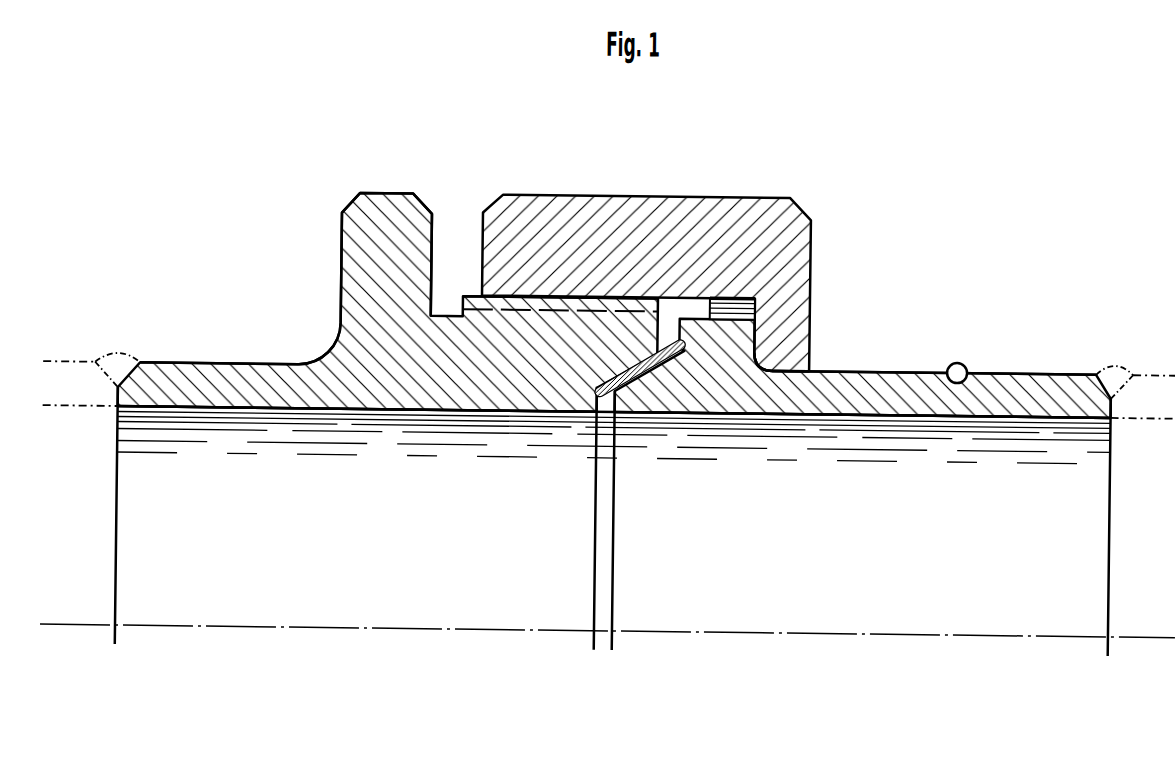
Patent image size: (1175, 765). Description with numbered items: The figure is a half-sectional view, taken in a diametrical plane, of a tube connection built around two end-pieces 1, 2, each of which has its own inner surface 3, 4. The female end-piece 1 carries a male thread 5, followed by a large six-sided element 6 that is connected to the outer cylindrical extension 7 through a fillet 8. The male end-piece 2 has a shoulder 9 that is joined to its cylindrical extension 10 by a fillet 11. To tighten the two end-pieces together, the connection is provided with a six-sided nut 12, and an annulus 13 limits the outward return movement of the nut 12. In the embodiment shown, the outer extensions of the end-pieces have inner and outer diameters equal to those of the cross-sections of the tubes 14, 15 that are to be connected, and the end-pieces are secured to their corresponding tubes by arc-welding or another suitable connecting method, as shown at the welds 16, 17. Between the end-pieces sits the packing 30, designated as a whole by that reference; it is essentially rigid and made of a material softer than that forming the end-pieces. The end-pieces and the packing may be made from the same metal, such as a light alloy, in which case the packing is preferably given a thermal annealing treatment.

The end-piece 1 is at (490, 366).
The end-piece 2 is at (715, 385).
The inner surface 3 is at (327, 406).
The inner surface 4 is at (928, 408).
The male thread 5 is at (528, 298).
The six-sided element 6 is at (380, 205).
The outer cylindrical extension 7 is at (187, 377).
The fillet 8 is at (319, 348).
The shoulder 9 is at (733, 331).
The cylindrical extension 10 is at (867, 381).
The fillet 11 is at (763, 364).
The six-sided nut 12 is at (743, 210).
The annulus 13 is at (957, 353).
The tube 14 is at (70, 378).
The tube 15 is at (1152, 383).
The weld 16 is at (117, 366).
The weld 17 is at (1105, 368).
The packing 30 is at (628, 360).